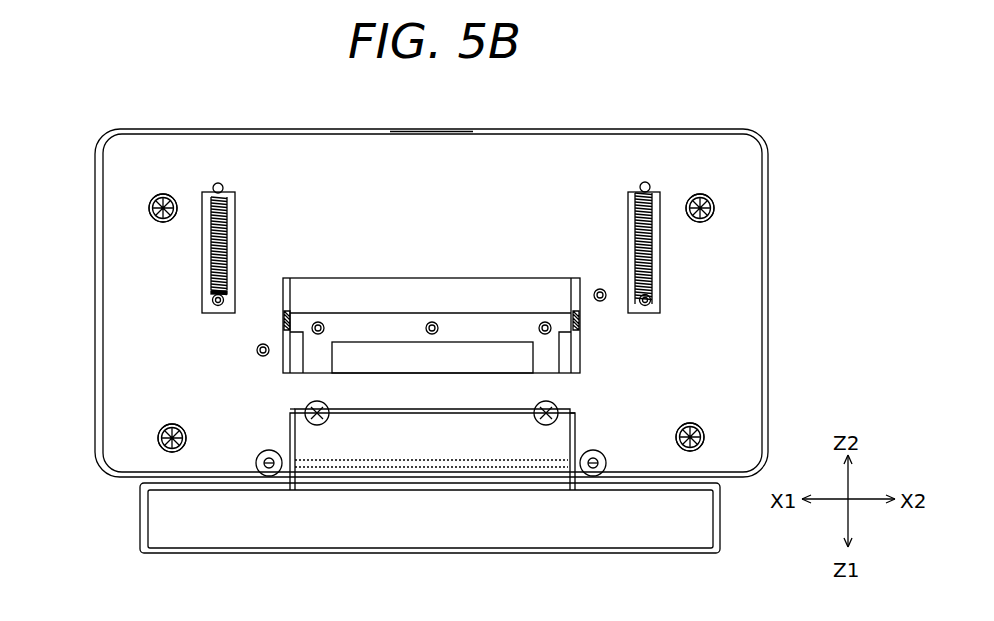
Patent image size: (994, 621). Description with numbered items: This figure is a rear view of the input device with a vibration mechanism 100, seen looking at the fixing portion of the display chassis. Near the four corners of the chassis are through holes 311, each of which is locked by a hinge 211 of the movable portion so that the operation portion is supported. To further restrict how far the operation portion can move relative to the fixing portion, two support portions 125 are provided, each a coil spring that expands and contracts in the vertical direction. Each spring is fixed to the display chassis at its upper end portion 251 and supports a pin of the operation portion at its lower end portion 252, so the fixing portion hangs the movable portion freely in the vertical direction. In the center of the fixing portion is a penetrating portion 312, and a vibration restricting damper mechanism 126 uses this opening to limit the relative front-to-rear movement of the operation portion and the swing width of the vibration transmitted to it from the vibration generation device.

The input device with a vibration mechanism 100 is at (108, 108).
The through hole 311 is at (149, 200).
The hinge 211 is at (152, 232).
The support portion 125 is at (233, 229).
The end portion 251 is at (223, 185).
The end portion 252 is at (218, 307).
The penetrating portion 312 is at (410, 301).
The vibration restricting damper mechanism 126 is at (293, 305).